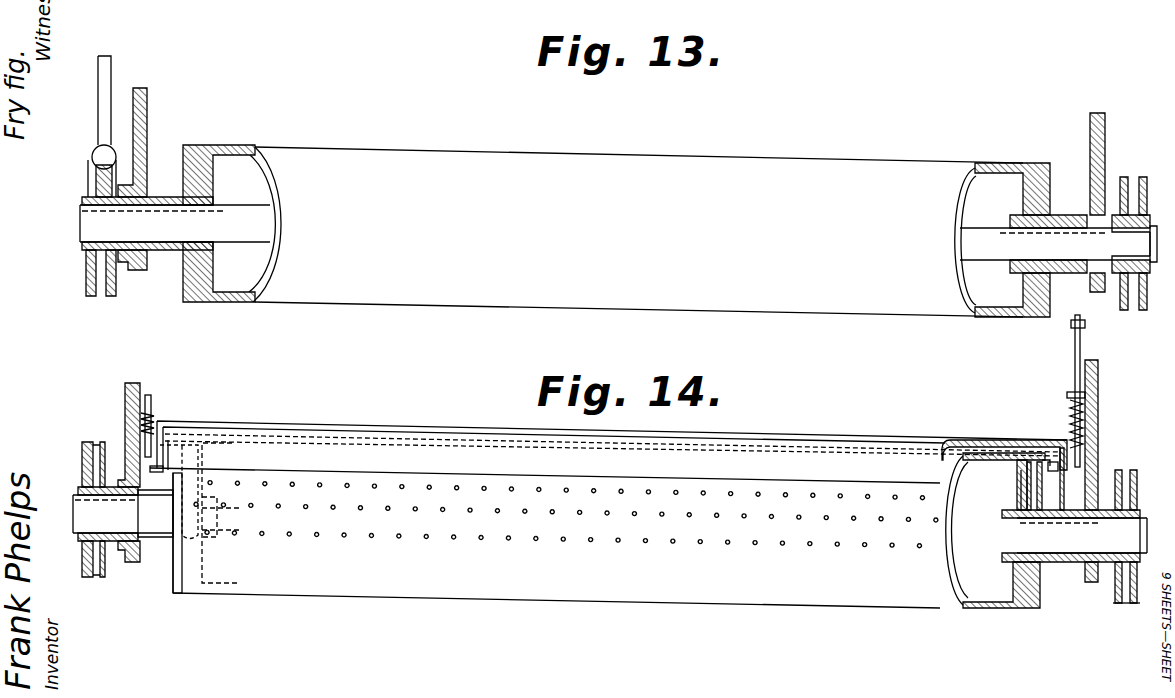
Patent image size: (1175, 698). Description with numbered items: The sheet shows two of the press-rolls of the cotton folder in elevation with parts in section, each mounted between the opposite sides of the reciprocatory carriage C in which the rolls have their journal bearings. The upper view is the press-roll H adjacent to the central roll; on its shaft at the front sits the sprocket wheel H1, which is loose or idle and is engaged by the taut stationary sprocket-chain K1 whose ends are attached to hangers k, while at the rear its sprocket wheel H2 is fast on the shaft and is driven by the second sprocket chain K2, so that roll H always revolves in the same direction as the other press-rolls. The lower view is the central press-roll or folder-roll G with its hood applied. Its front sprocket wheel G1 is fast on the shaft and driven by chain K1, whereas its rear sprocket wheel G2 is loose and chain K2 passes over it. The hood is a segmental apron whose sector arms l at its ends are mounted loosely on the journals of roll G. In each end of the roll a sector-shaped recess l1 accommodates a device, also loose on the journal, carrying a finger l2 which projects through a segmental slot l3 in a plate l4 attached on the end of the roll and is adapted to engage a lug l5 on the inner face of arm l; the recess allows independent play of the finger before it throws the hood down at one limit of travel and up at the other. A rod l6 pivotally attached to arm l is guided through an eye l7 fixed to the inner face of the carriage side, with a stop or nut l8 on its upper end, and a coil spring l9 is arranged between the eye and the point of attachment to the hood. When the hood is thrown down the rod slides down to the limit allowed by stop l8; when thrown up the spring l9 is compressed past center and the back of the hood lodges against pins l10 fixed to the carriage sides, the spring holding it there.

In FIG. 13, the press-roll H is at (618, 231).
In FIG. 13, the sprocket wheel H1 is at (1128, 302).
In FIG. 13, the sprocket wheel H2 is at (95, 256).
In FIG. 13, the reciprocatory carriage C is at (146, 120).
In FIG. 14, the reciprocatory carriage C is at (131, 383).
In FIG. 13, the hanger K is at (104, 111).
In FIG. 13, the sprocket-chain K1 is at (1124, 180).
In FIG. 14, the sprocket-chain K1 is at (1115, 603).
In FIG. 13, the sprocket chain K2 is at (90, 285).
In FIG. 14, the sprocket chain K2 is at (88, 442).
In FIG. 14, the central press-roll G is at (597, 525).
In FIG. 14, the sprocket wheel G1 is at (1117, 468).
In FIG. 14, the sprocket wheel G2 is at (88, 472).
In FIG. 14, the sector arm l is at (148, 481).
In FIG. 14, the sector-shaped recess l1 is at (1027, 467).
In FIG. 14, the finger l2 is at (185, 440).
In FIG. 14, the segmental slot l3 is at (200, 438).
In FIG. 14, the plate l4 is at (176, 558).
In FIG. 14, the lug l5 is at (170, 440).
In FIG. 14, the rod l6 is at (148, 408).
In FIG. 14, the eye l7 is at (1070, 391).
In FIG. 14, the stop or nut l8 is at (1076, 327).
In FIG. 14, the coil spring l9 is at (152, 425).
In FIG. 14, the pin l10 is at (165, 468).